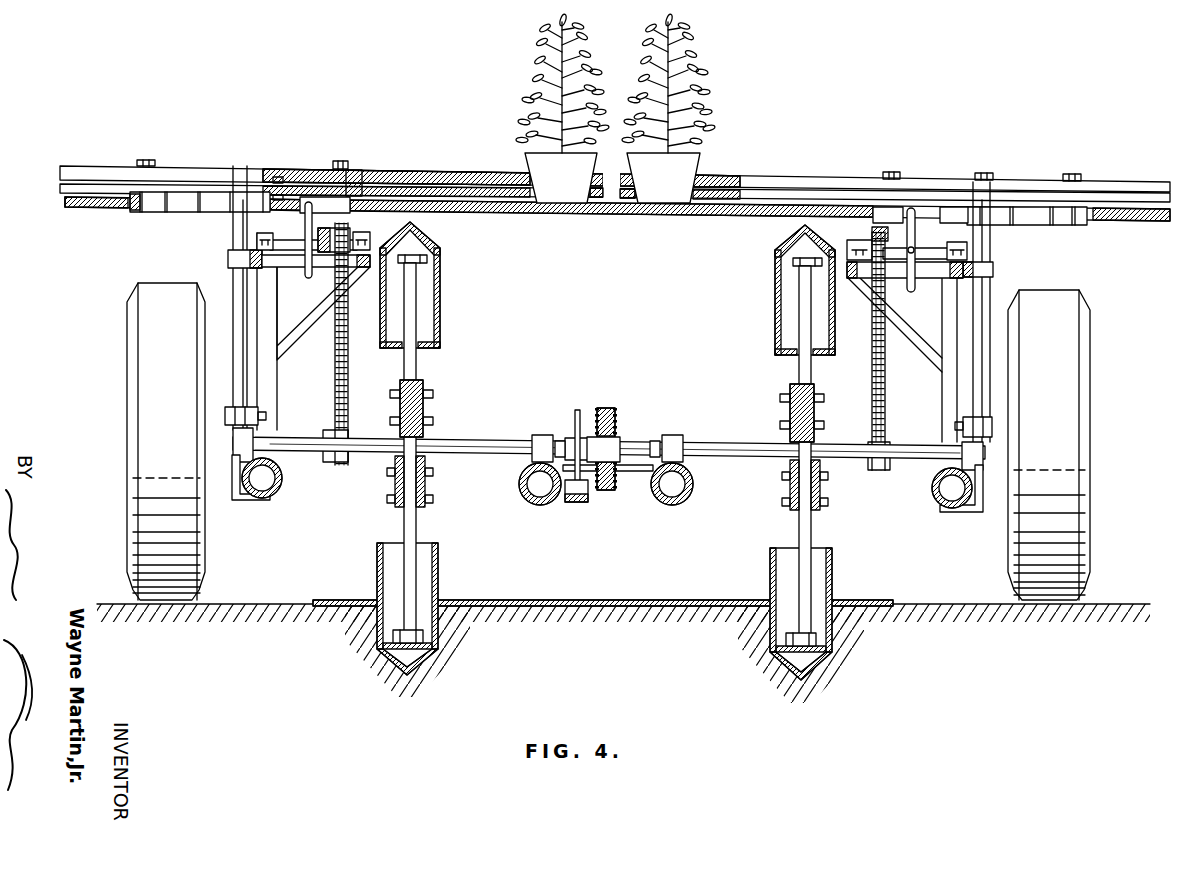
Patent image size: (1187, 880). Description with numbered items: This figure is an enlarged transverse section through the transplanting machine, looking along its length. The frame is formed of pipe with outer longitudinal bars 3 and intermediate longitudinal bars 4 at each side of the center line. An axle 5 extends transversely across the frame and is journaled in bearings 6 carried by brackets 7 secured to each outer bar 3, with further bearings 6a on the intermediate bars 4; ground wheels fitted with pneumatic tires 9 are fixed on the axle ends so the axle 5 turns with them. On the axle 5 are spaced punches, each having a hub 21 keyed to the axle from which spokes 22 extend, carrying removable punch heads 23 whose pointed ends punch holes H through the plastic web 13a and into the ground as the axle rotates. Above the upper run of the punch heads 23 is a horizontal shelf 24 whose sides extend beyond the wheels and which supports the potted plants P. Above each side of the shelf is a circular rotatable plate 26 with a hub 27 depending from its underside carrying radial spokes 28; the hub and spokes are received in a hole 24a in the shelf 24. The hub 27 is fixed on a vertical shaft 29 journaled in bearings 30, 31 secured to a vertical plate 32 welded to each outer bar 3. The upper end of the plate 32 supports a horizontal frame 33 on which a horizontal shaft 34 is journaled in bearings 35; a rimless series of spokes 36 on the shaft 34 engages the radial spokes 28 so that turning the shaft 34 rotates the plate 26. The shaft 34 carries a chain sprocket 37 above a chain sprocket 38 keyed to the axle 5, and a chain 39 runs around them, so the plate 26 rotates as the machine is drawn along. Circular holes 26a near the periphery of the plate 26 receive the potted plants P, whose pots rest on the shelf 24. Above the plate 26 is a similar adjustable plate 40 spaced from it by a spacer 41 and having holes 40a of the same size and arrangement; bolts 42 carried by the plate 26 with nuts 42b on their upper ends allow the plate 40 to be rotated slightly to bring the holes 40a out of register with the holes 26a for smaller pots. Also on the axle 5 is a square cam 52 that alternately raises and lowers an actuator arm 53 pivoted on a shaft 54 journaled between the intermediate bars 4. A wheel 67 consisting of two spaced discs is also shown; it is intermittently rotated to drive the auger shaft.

The longitudinal bar 3 is at (278, 497).
The longitudinal bar 4 is at (538, 503).
The axle 5 is at (462, 444).
The bearing 6 is at (235, 447).
The bearing 6a is at (543, 435).
The bracket 7 is at (235, 478).
The pneumatic tire 9 is at (150, 318).
The plastic web 13a is at (587, 607).
The hub 21 is at (432, 408).
The spoke 22 is at (418, 357).
The punch head 23 is at (443, 265).
The shelf 24 is at (65, 203).
The hole 24a is at (127, 208).
The rotatable plate 26 is at (60, 188).
The circular hole 26a is at (589, 206).
The hub 27 is at (235, 198).
The radial spoke 28 is at (193, 206).
The vertical shaft 29 is at (240, 300).
The bearing 30 is at (228, 262).
The bearing 31 is at (226, 415).
The vertical plate 32 is at (258, 313).
The horizontal frame 33 is at (286, 264).
The horizontal shaft 34 is at (280, 247).
The bearing 35 is at (265, 237).
The spoke 36 is at (927, 169).
The chain sprocket 37 is at (607, 227).
The chain sprocket 38 is at (334, 465).
The chain 39 is at (347, 354).
The adjustable plate 40 is at (60, 172).
The hole 40a is at (524, 172).
The spacer 41 is at (356, 170).
The bolt 42 is at (152, 153).
The nut 42b is at (340, 161).
The square cam 52 is at (578, 410).
The actuator arm 53 is at (575, 503).
The shaft 54 is at (648, 472).
The wheel 67 is at (610, 408).
The hole H is at (786, 670).
The potted plant P is at (597, 158).